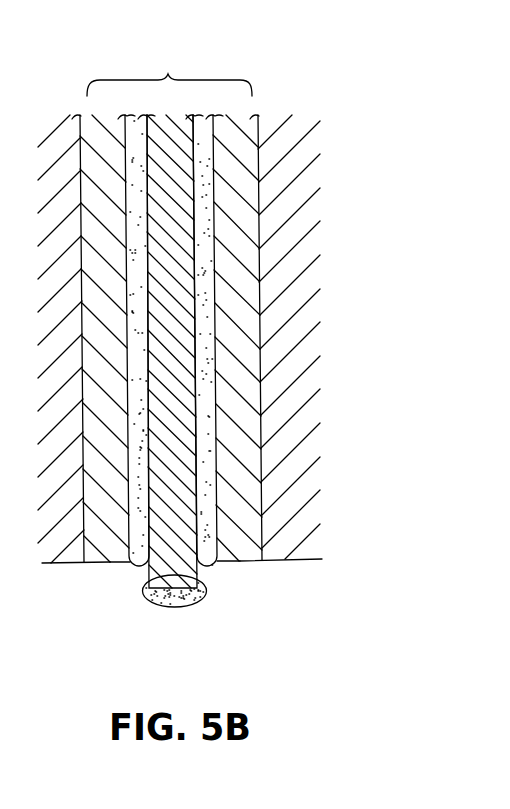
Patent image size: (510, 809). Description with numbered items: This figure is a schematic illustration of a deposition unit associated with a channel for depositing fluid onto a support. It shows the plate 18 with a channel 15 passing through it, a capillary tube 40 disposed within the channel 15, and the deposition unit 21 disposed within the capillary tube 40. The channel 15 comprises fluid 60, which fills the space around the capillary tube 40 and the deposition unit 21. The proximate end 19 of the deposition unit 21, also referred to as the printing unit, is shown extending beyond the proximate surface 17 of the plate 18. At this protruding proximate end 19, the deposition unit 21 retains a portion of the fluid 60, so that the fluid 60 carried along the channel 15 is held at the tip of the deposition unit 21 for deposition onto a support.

The channel 15 is at (168, 74).
The plate 18 is at (297, 167).
The capillary tube 40 is at (247, 218).
The fluid 60 is at (203, 280).
The deposition unit 21 is at (178, 417).
The proximate end 19 is at (200, 570).
The proximate surface 17 is at (300, 560).